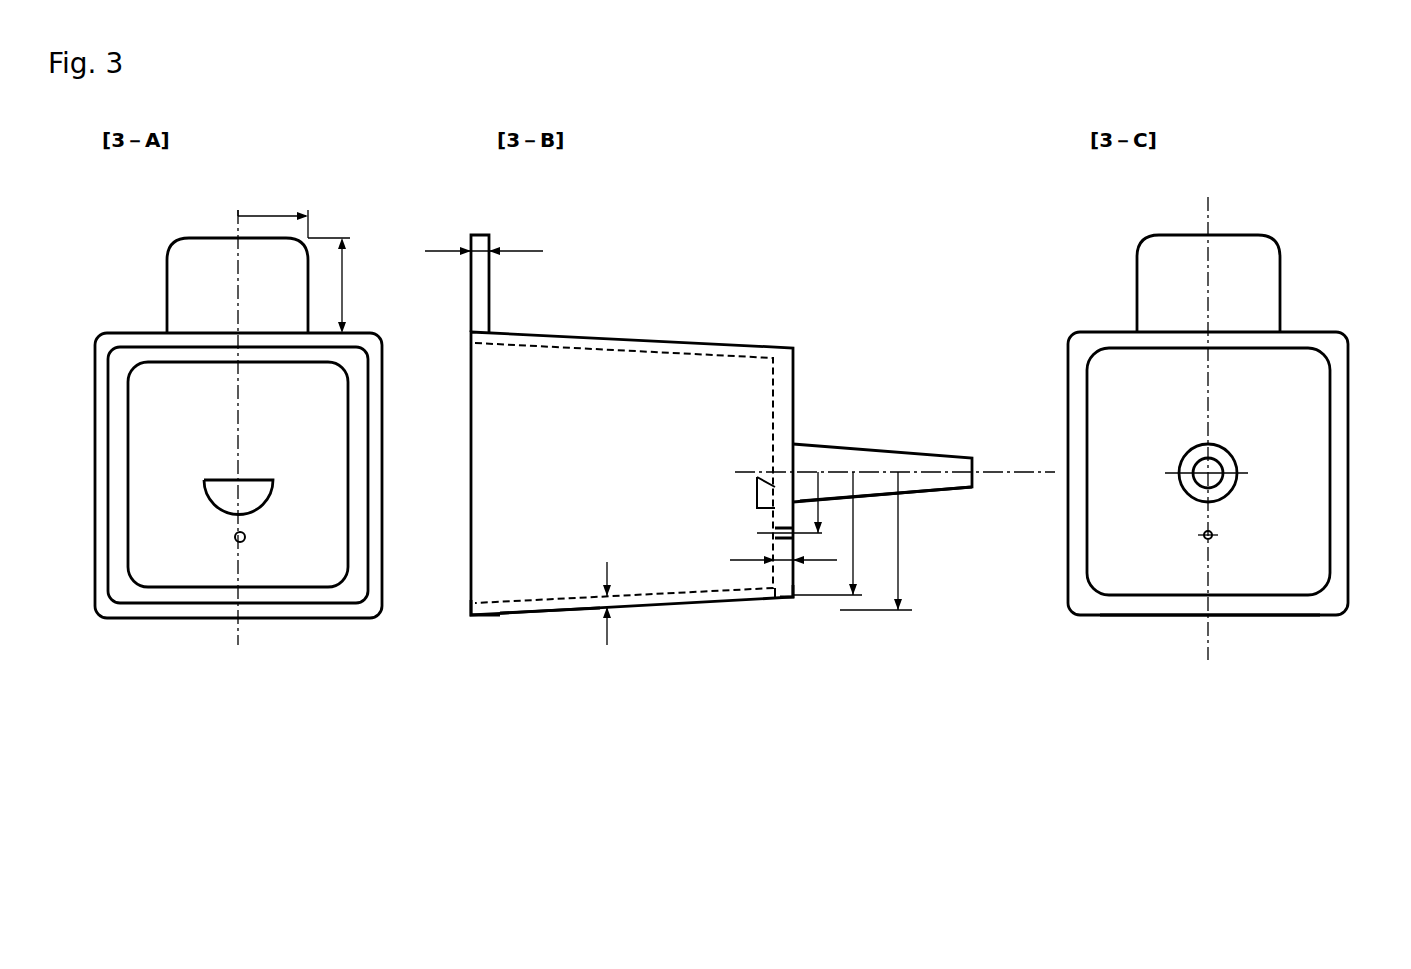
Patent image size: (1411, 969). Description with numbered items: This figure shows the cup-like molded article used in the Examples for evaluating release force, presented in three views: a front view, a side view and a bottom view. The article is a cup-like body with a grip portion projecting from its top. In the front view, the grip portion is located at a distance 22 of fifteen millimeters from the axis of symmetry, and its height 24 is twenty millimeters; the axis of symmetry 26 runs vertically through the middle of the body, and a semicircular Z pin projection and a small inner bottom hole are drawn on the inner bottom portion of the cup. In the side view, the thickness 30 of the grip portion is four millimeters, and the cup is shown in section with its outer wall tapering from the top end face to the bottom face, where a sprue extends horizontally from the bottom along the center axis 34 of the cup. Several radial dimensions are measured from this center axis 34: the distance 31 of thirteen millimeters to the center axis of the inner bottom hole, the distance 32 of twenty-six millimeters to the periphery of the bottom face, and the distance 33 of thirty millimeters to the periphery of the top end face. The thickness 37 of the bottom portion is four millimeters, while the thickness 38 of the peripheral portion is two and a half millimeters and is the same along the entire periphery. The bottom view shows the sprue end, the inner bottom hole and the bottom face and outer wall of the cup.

The distance from the axis of symmetry of the grip portion 22 is at (273, 212).
The height of the grip portion 24 is at (345, 273).
The axis of symmetry 26 is at (238, 630).
The thickness of the grip portion 30 is at (482, 247).
The distance from the center axis to the center axis of the inner bottom hole 31 is at (799, 502).
The distance from the center axis to the periphery of the bottom face of the cup 32 is at (832, 533).
The distance from the center axis to the periphery of the top end face of the cup 33 is at (878, 541).
The center axis of the cup 34 is at (968, 460).
The thickness of the bottom portion of the cup 37 is at (778, 573).
The thickness of the peripheral portion of the cup 38 is at (602, 575).